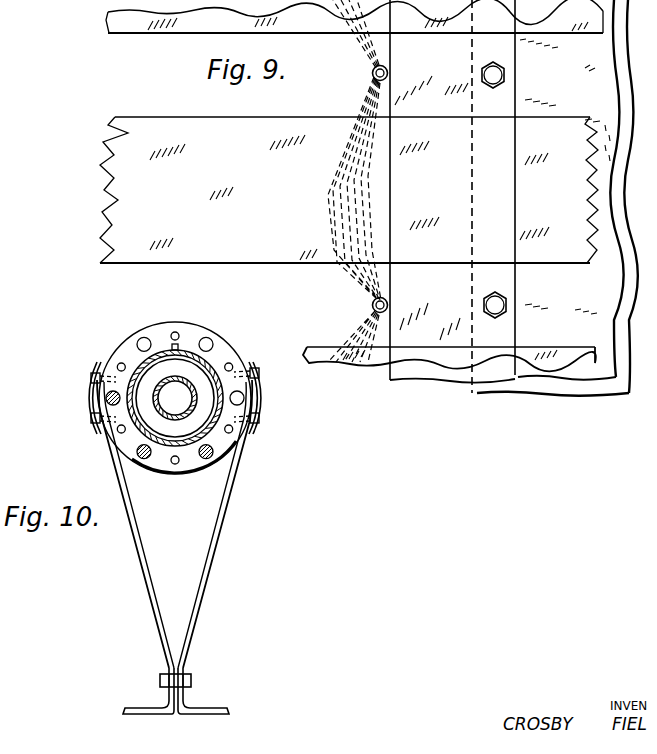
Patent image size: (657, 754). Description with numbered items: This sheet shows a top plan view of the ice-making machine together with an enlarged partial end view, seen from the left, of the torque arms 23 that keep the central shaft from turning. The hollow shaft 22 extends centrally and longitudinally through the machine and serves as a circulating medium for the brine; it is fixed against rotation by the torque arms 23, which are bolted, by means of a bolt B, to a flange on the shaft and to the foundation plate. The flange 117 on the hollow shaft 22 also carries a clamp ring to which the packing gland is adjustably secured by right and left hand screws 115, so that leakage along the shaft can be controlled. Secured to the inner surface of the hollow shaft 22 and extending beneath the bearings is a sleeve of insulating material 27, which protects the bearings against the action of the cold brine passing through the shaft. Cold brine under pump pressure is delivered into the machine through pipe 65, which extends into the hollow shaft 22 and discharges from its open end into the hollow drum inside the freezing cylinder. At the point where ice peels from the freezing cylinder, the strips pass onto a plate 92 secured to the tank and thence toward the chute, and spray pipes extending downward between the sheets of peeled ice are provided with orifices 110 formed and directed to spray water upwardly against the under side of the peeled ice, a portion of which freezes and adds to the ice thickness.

In FIG. 9, the orifices 110 is at (372, 73).
In FIG. 9, the bolt B is at (533, 122).
In FIG. 9, the plate 92 is at (427, 377).
In FIG. 10, the flange 117 is at (228, 353).
In FIG. 10, the right and left hand screws 115 is at (176, 332).
In FIG. 10, the pipe 65 is at (178, 388).
In FIG. 10, the sleeve of insulating material 27 is at (168, 443).
In FIG. 10, the hollow shaft 22 is at (188, 453).
In FIG. 10, the torque arms 23 is at (210, 542).